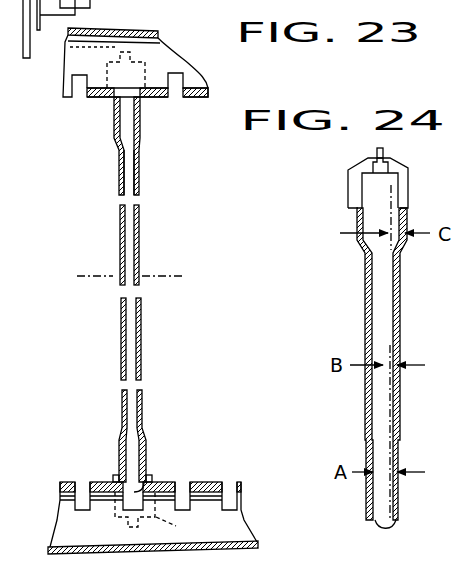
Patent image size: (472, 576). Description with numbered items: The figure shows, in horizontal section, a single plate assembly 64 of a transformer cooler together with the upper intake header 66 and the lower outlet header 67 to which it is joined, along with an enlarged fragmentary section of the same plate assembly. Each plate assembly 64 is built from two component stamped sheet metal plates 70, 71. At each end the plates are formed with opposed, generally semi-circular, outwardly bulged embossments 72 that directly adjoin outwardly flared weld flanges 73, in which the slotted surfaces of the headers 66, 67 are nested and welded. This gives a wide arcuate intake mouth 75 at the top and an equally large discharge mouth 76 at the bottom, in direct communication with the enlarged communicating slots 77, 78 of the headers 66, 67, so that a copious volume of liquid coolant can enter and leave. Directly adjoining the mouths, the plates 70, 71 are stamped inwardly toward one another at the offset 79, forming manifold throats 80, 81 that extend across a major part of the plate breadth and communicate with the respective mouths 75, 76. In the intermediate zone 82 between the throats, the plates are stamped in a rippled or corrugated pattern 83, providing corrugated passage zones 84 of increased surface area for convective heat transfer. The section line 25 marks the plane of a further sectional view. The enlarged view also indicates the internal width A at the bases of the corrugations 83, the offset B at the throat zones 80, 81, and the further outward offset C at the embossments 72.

In FIG. 23, the section line 25 is at (93, 274).
In FIG. 23, the plate assembly 64 is at (146, 220).
In FIG. 24, the plate assembly 64 is at (366, 420).
In FIG. 23, the upper intake header 66 is at (62, 75).
In FIG. 23, the lower outlet header 67 is at (58, 522).
In FIG. 24, the stamped sheet metal plate 70 is at (367, 306).
In FIG. 24, the stamped sheet metal plate 71 is at (399, 318).
In FIG. 23, the outwardly bulged embossment 72 is at (141, 129).
In FIG. 24, the outwardly bulged embossment 72 is at (405, 225).
In FIG. 23, the weld flange 73 is at (137, 68).
In FIG. 24, the weld flange 73 is at (398, 212).
In FIG. 23, the intake mouth 75 is at (128, 135).
In FIG. 24, the intake mouth 75 is at (373, 212).
In FIG. 23, the discharge mouth 76 is at (135, 450).
In FIG. 23, the communicating slot 77 is at (184, 85).
In FIG. 24, the communicating slot 77 is at (368, 195).
In FIG. 23, the communicating slot 78 is at (145, 473).
In FIG. 23, the inward offset 79 is at (142, 203).
In FIG. 24, the inward offset 79 is at (398, 352).
In FIG. 23, the manifold throat 80 is at (125, 212).
In FIG. 24, the manifold throat 80 is at (388, 296).
In FIG. 23, the manifold throat 81 is at (132, 365).
In FIG. 23, the intermediate zone 82 is at (143, 287).
In FIG. 23, the corrugation 83 is at (123, 303).
In FIG. 24, the corrugation 83 is at (400, 507).
In FIG. 24, the corrugated passage zone 84 is at (385, 488).